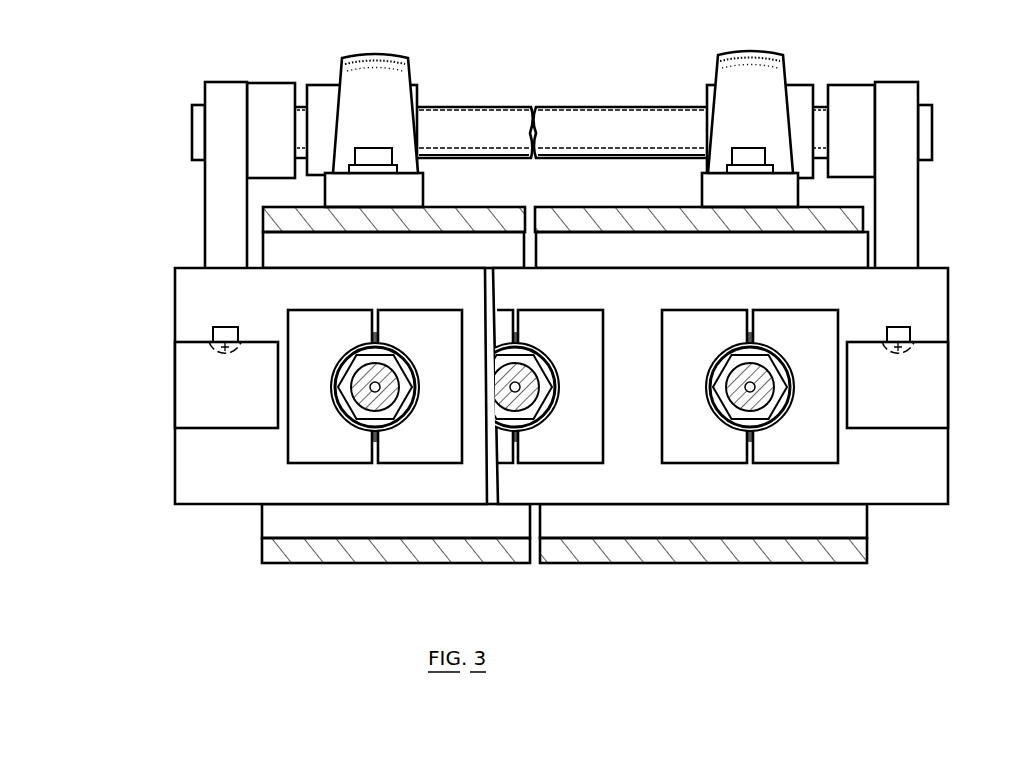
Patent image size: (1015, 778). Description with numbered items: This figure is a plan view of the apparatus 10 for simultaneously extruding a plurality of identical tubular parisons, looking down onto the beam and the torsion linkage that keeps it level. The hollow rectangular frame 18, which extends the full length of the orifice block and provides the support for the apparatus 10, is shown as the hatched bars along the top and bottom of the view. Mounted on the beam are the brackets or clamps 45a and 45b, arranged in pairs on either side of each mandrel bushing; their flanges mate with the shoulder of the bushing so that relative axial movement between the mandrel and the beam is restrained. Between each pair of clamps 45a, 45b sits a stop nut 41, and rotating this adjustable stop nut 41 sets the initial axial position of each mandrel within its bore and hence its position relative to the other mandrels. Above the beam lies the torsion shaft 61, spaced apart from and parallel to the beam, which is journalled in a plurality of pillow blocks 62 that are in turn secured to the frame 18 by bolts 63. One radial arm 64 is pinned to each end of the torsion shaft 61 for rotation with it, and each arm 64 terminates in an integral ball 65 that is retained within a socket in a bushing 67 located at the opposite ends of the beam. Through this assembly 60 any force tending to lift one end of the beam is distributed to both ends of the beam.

The apparatus 10 is at (681, 588).
The hollow rectangular frame 18 is at (588, 217).
The stop nut 41 is at (347, 405).
The bracket or clamp 45a is at (302, 452).
The bracket or clamp 45b is at (430, 446).
The roller shaft assembly 60 is at (529, 62).
The torsion shaft 61 is at (597, 113).
The pillow block 62 is at (375, 62).
The bolt 63 is at (370, 153).
The radial arm 64 is at (205, 222).
The integral ball 65 is at (225, 360).
The bushing 67 is at (222, 420).